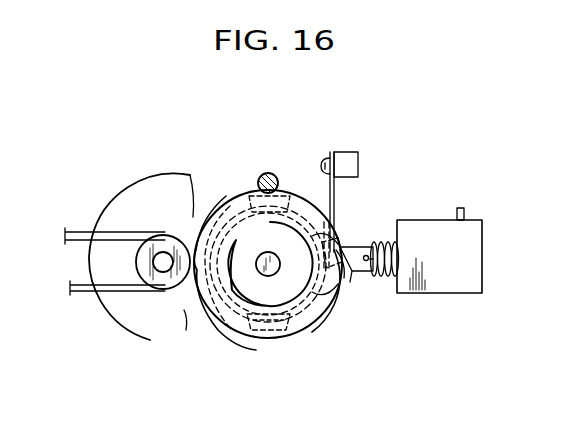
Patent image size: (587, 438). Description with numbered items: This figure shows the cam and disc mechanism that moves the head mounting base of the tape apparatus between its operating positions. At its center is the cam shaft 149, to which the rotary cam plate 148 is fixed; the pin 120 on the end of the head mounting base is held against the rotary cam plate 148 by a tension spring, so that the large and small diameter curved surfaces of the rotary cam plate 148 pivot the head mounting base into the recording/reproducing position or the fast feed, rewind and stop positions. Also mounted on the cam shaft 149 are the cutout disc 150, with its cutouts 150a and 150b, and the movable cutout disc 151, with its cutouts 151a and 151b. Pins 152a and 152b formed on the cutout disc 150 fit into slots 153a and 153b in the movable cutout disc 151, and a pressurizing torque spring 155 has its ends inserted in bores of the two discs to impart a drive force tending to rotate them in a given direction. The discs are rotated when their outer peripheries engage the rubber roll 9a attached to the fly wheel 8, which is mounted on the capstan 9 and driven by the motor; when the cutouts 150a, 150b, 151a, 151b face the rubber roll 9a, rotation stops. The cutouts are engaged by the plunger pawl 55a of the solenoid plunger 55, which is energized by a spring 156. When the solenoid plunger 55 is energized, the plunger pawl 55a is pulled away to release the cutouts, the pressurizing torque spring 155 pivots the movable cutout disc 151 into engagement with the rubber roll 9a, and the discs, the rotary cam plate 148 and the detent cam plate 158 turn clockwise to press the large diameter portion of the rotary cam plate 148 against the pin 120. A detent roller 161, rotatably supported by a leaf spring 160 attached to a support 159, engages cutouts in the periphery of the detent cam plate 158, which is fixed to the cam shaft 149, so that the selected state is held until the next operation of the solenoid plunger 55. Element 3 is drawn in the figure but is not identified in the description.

The guide rails 3 is at (86, 293).
The fly wheel 8 is at (152, 333).
The capstan 9 is at (163, 250).
The rubber roll 9a is at (165, 290).
The solenoid plunger 55 is at (480, 242).
The plunger pawl 55a is at (338, 271).
The pin 120 is at (265, 174).
The rotary cam plate 148 is at (309, 192).
The cam shaft 149 is at (276, 262).
The cutout disc 150 is at (278, 337).
The cutout 150a is at (190, 310).
The cutout 150b is at (366, 300).
The movable cutout disc 151 is at (323, 342).
The cutout 151a is at (236, 341).
The cutout 151b is at (415, 299).
The pin 152a is at (293, 194).
The pin 152b is at (278, 342).
The slot 153a is at (236, 193).
The slot 153b is at (316, 312).
The pressurizing torque spring 155 is at (245, 322).
The spring 156 is at (388, 245).
The detent cam plate 158 is at (358, 312).
The support 159 is at (356, 170).
The leaf spring 160 is at (335, 197).
The detent roller 161 is at (338, 285).